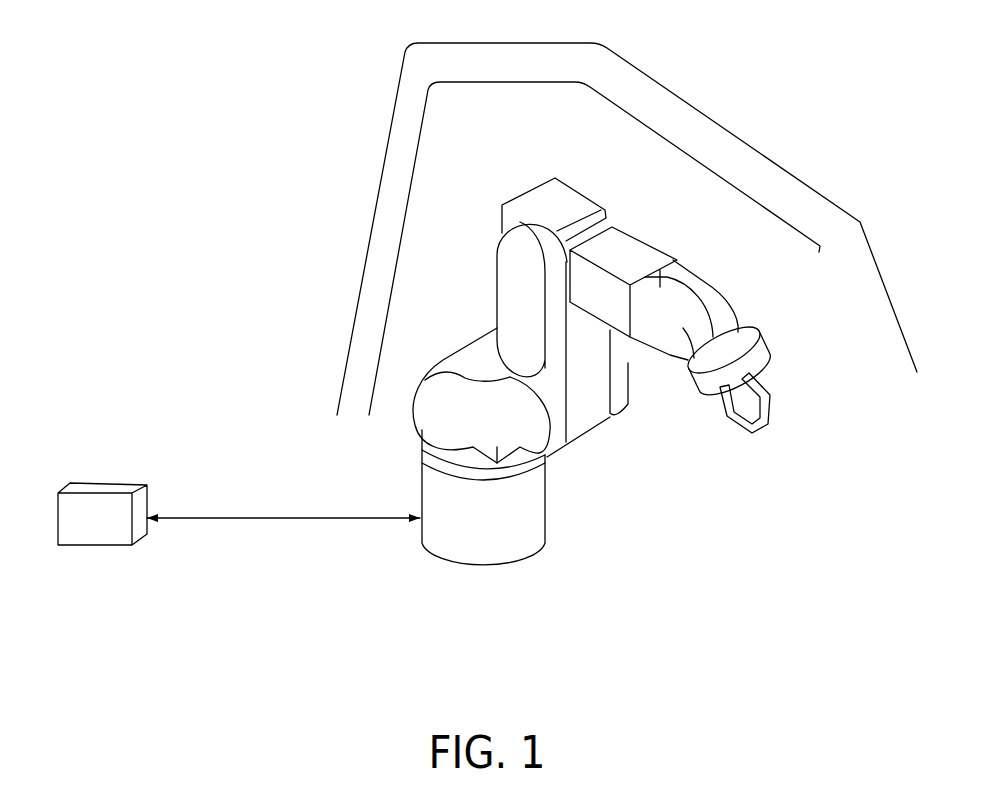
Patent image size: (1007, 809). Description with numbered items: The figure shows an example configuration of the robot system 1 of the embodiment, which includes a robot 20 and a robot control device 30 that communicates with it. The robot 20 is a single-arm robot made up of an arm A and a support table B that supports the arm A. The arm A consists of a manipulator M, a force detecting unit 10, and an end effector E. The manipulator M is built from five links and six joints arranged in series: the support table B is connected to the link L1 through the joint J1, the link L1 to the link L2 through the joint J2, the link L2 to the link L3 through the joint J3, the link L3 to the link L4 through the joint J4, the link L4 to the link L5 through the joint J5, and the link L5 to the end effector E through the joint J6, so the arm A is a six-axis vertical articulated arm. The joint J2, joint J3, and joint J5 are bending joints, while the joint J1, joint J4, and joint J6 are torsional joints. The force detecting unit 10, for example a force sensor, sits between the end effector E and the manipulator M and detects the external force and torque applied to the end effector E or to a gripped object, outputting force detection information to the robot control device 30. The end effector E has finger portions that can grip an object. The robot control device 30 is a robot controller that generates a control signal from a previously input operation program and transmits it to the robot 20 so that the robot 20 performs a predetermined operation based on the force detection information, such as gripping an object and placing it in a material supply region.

The robot system 1 is at (229, 136).
The arm A is at (501, 46).
The manipulator M is at (501, 85).
The robot control device 30 is at (104, 482).
The robot 20 is at (595, 399).
The support table B is at (465, 547).
The joint J1 is at (438, 460).
The link L1 is at (440, 408).
The joint J2 is at (537, 435).
The link L2 is at (597, 362).
The joint J3 is at (517, 255).
The link L3 is at (550, 200).
The joint J4 is at (615, 218).
The link L4 is at (641, 243).
The joint J5 is at (725, 310).
The link L5 is at (707, 303).
The joint J6 is at (794, 369).
The force detecting unit 10 is at (747, 327).
The end effector E is at (771, 406).